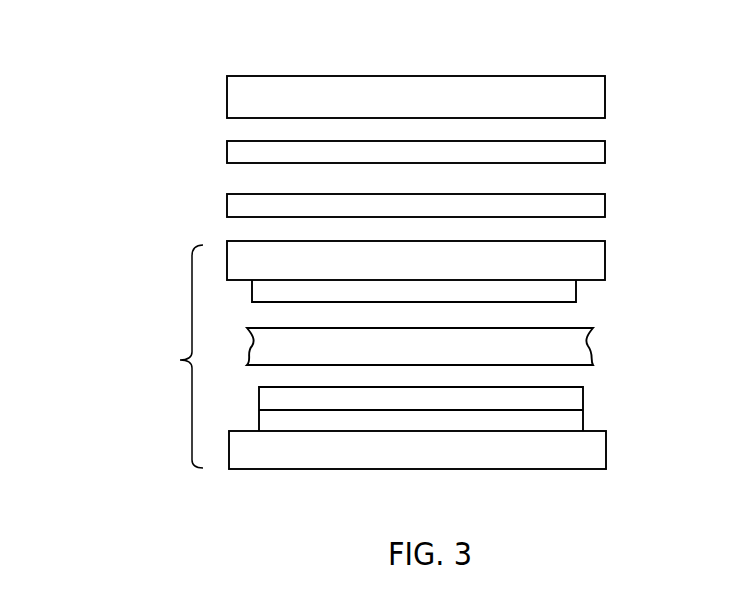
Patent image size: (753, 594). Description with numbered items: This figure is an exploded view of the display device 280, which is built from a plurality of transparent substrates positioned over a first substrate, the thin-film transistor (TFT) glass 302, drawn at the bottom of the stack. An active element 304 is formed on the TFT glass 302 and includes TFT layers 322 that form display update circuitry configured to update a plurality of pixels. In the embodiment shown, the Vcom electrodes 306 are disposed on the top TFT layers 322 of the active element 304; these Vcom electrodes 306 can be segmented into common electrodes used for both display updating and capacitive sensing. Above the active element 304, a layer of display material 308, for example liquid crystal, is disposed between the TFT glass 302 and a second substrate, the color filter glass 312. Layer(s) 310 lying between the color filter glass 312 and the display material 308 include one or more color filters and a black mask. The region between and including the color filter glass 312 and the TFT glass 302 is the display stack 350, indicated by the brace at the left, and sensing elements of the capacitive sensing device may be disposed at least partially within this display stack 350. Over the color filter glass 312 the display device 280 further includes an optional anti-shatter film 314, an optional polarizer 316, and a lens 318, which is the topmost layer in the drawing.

The display device 280 is at (148, 62).
The thin-film transistor (TFT) glass 302 is at (606, 448).
The active element 304 is at (583, 424).
The Vcom electrodes 306 is at (583, 394).
The display material 308 is at (593, 345).
The layer(s) 310 is at (576, 293).
The color filter glass 312 is at (605, 257).
The anti-shatter film 314 is at (605, 206).
The polarizer 316 is at (605, 153).
The lens 318 is at (605, 94).
The TFT layers 322 is at (508, 410).
The display stack 350 is at (172, 356).